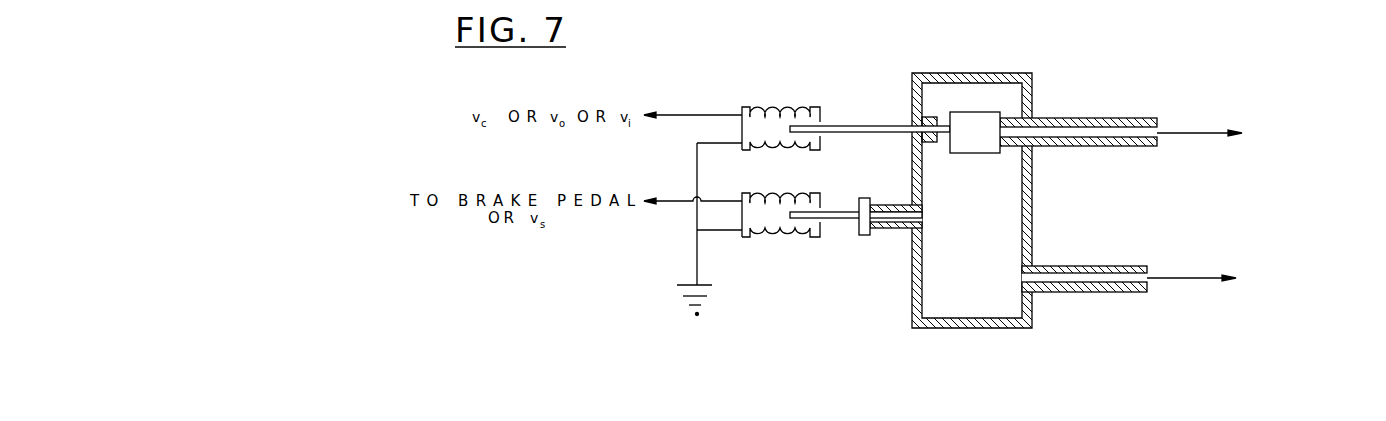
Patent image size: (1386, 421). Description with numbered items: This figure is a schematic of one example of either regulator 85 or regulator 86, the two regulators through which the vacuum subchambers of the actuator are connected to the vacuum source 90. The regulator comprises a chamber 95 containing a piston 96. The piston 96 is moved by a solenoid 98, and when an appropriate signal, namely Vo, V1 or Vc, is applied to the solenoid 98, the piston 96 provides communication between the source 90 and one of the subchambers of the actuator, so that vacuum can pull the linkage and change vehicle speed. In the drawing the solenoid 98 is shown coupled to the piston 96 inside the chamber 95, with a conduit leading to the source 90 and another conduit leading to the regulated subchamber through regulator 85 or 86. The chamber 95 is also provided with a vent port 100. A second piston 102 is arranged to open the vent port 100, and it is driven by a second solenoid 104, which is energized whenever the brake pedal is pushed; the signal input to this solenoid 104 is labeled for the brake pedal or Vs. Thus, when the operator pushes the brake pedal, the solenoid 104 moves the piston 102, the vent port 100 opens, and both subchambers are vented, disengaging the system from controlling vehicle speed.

The solenoid 98 is at (784, 106).
The solenoid 104 is at (762, 236).
The piston 102 is at (835, 220).
The vent port 100 is at (868, 236).
The piston 96 is at (975, 157).
The chamber 95 is at (1034, 224).
The vacuum source 90 is at (1164, 127).
The regulator 85 is at (1149, 274).
The regulator 86 is at (1245, 274).